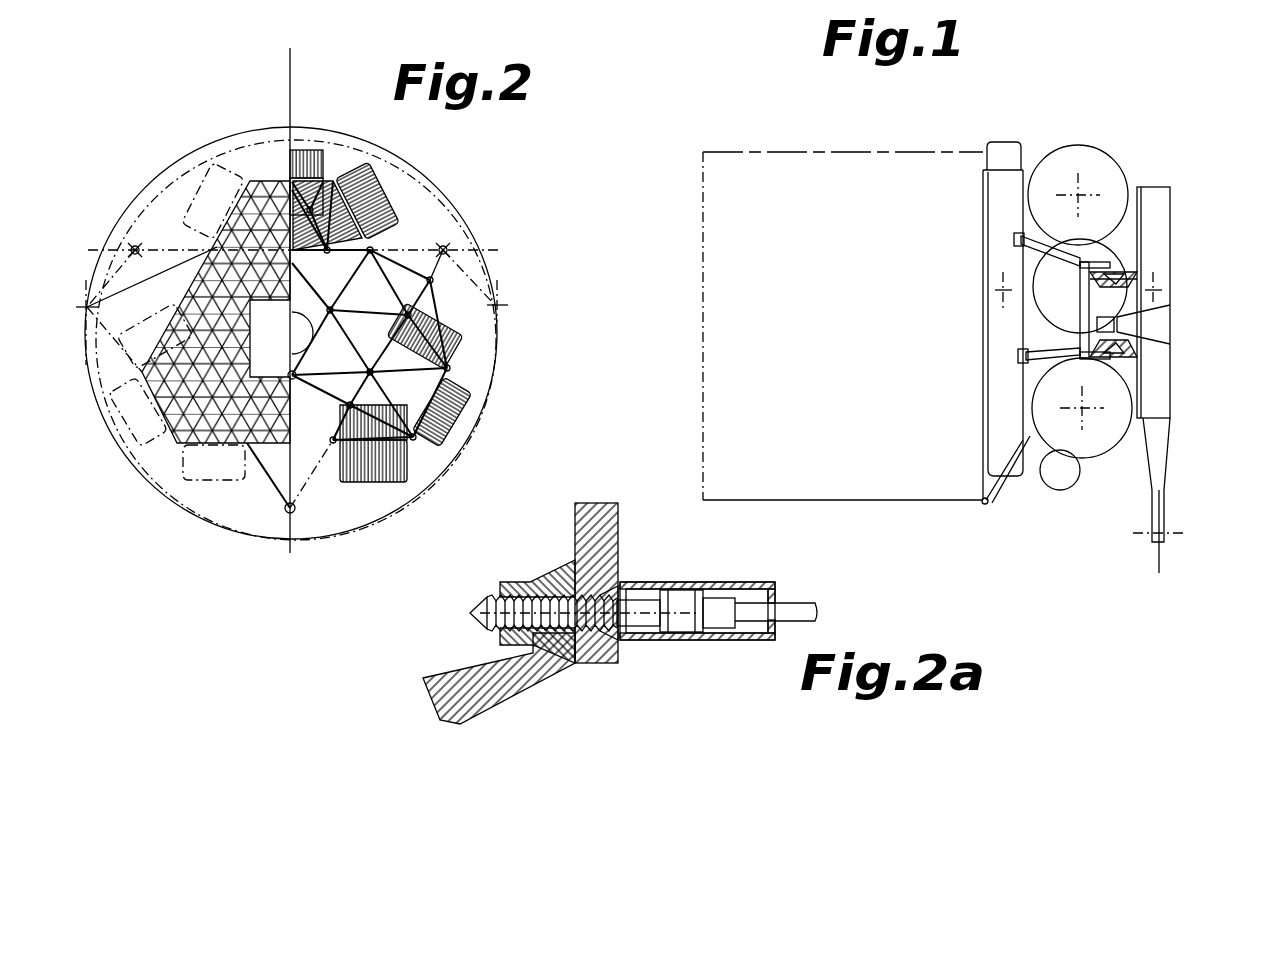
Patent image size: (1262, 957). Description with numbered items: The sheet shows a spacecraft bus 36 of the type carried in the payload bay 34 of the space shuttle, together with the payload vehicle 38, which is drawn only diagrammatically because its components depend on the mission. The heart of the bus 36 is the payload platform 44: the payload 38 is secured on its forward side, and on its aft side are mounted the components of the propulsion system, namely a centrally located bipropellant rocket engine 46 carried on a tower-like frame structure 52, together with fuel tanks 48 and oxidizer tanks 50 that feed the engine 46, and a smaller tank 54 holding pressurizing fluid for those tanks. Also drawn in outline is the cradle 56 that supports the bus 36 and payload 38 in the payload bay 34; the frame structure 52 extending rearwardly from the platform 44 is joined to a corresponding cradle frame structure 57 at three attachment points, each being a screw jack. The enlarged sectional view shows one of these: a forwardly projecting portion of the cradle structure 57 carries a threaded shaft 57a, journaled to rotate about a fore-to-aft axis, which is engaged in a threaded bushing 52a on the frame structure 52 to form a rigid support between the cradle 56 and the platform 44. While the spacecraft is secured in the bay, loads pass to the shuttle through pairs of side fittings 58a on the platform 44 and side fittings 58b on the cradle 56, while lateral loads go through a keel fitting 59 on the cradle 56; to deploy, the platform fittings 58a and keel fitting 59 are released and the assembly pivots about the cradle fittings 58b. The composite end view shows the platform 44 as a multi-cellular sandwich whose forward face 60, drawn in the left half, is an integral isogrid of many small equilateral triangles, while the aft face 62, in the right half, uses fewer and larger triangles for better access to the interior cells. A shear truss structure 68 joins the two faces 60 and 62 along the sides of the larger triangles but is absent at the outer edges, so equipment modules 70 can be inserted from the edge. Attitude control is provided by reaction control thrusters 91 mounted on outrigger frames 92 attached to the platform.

In FIG. 2, the payload bay 34 is at (467, 456).
In FIG. 1, the spacecraft bus 36 is at (1042, 134).
In FIG. 1, the payload vehicle 38 is at (762, 152).
In FIG. 1, the payload platform 44 is at (1003, 136).
In FIG. 1, the rocket engine 46 is at (1172, 317).
In FIG. 1, the fuel tanks 48 is at (1122, 165).
In FIG. 1, the oxidizer tanks 50 is at (1115, 268).
In FIG. 1, the frame structure 52 is at (1000, 268).
In FIG. 2A, the frame structure 52 is at (528, 686).
In FIG. 2A, the threaded bushing 52a is at (610, 572).
In FIG. 1, the pressurizing fluid tank 54 is at (1048, 487).
In FIG. 1, the cradle 56 is at (1170, 430).
In FIG. 1, the cradle frame structure 57 is at (1125, 283).
In FIG. 2A, the cradle frame structure 57 is at (690, 638).
In FIG. 2A, the threaded shaft 57a is at (614, 650).
In FIG. 1, the platform side fittings 58a is at (1000, 303).
In FIG. 2, the platform side fittings 58a is at (92, 305).
In FIG. 1, the cradle side fittings 58b is at (1160, 297).
In FIG. 1, the keel fitting 59 is at (1152, 545).
In FIG. 1, the forward face 60 is at (983, 212).
In FIG. 2, the forward face 60 is at (163, 517).
In FIG. 1, the aft face 62 is at (1030, 172).
In FIG. 2, the aft face 62 is at (352, 543).
In FIG. 1, the platform shear truss structure 68 is at (1000, 392).
In FIG. 2, the equipment modules 70 is at (365, 168).
In FIG. 2, the reaction control thrusters 91 is at (133, 245).
In FIG. 2, the outrigger frames 92 is at (172, 228).